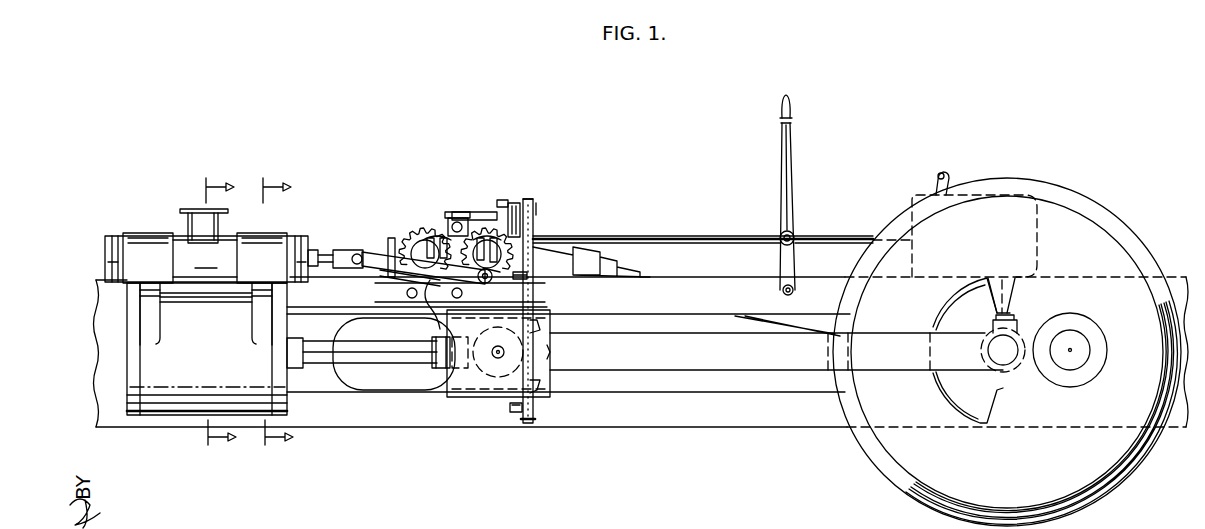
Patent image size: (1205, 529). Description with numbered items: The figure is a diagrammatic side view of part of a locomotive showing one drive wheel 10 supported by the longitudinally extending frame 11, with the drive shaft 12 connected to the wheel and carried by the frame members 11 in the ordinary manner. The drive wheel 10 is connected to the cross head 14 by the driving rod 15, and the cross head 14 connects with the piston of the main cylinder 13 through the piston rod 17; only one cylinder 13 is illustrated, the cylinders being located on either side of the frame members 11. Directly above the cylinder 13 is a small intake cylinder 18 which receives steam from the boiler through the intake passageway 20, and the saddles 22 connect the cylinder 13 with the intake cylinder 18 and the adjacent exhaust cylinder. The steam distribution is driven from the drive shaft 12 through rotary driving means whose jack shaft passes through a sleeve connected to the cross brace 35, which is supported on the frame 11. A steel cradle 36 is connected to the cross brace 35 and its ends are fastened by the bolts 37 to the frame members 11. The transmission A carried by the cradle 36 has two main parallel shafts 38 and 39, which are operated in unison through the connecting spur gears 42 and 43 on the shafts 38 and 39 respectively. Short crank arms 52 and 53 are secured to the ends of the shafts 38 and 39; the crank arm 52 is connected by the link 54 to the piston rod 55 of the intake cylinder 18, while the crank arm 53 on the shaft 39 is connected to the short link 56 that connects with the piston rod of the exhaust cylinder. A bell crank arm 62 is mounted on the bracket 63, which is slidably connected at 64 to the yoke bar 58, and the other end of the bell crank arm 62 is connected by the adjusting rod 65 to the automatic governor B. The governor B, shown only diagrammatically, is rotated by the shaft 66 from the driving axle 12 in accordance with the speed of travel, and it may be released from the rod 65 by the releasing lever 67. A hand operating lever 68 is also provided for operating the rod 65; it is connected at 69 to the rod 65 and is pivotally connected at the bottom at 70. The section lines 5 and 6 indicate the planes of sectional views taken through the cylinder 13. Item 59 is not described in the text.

The section line 5- 5 is at (217, 311).
The section line 6- 6 is at (274, 311).
The drive wheel 10 is at (870, 452).
The frame 11 is at (646, 430).
The drive shaft 12 is at (988, 350).
The cylinder 13 is at (176, 395).
The cross head 14 is at (491, 387).
The driving rod 15 is at (710, 360).
The piston rod 17 is at (380, 365).
The intake cylinder 18 is at (108, 262).
The intake passageway 20 is at (197, 218).
The saddles 22 is at (140, 238).
The cross brace 35 is at (533, 207).
The cradle 36 is at (392, 248).
The bolts 37 is at (410, 298).
The transmission shaft 38 is at (488, 287).
The transmission shaft 39 is at (442, 300).
The spur gear 42 is at (495, 278).
The spur gear 43 is at (412, 235).
The crank arm 52 is at (520, 300).
The crank arm 53 is at (408, 282).
The link 54 is at (470, 294).
The piston rod 55 is at (342, 253).
The short link 56 is at (372, 272).
The yoke bar 58 is at (455, 212).
The pivot 59 is at (455, 222).
The bell crank arm 62 is at (501, 202).
The bracket 63 is at (527, 200).
The sliding connection 64 is at (462, 212).
The adjusting rod 65 is at (614, 241).
The governor shaft 66 is at (1012, 298).
The releasing lever 67 is at (945, 180).
The hand operating lever 68 is at (790, 160).
The connection 69 is at (780, 235).
The pivot 70 is at (783, 287).
The transmission A is at (428, 232).
The automatic governor B is at (1040, 222).